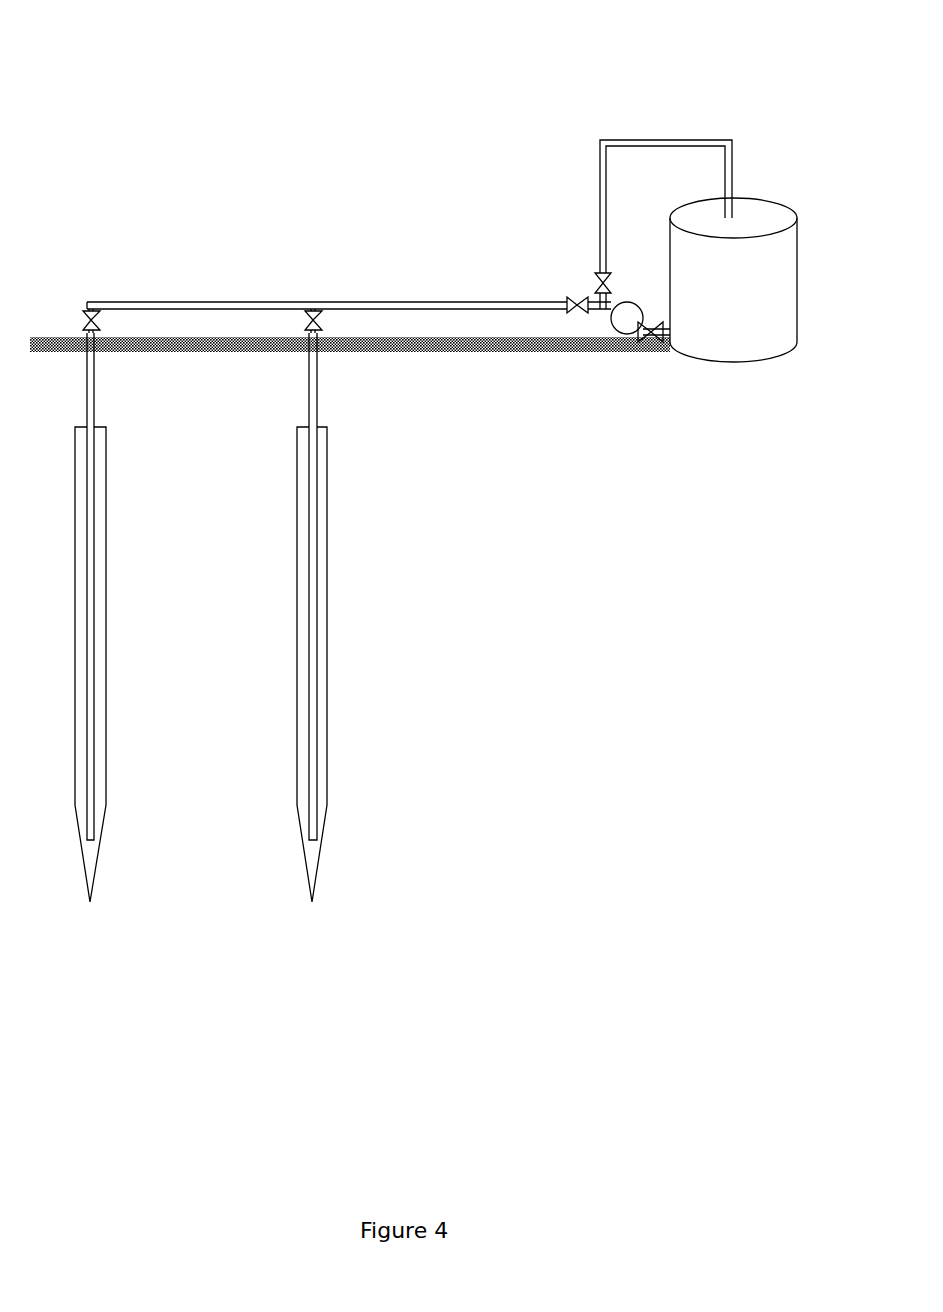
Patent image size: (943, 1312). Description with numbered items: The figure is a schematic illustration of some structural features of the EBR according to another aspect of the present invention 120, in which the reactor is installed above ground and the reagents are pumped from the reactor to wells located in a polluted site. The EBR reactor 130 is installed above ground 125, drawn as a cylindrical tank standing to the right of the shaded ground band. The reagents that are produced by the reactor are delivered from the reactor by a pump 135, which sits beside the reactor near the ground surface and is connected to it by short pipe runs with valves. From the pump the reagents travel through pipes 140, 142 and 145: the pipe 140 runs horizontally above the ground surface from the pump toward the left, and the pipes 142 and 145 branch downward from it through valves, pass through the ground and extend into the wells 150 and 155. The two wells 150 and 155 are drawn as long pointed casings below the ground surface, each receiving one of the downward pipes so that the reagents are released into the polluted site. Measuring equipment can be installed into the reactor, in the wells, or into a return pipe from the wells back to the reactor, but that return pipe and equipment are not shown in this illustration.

The aspect of the present invention 120 is at (387, 123).
The ground 125 is at (45, 337).
The EBR reactor 130 is at (752, 197).
The pump 135 is at (617, 340).
The pipe 140 is at (238, 302).
The pipe 142 is at (318, 385).
The pipe 145 is at (95, 382).
The well 150 is at (327, 572).
The well 155 is at (106, 592).